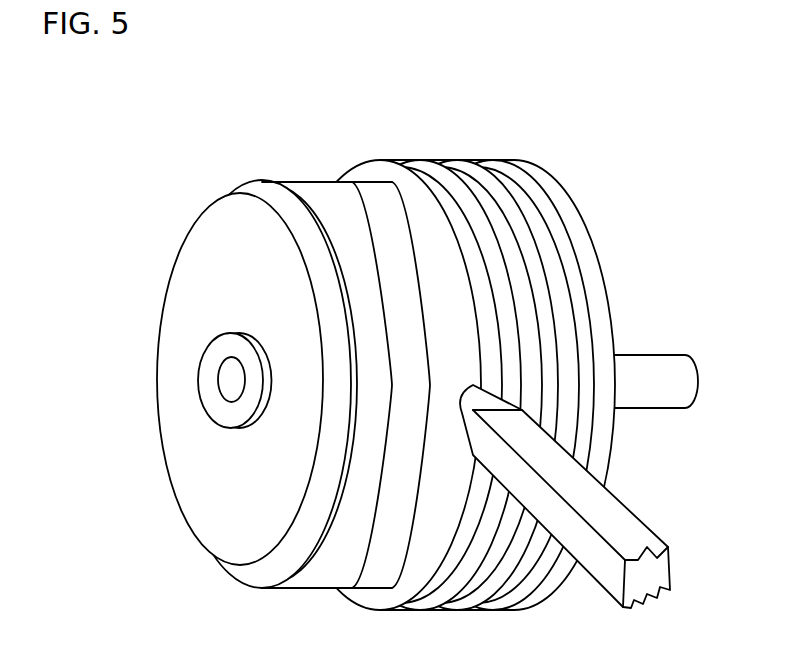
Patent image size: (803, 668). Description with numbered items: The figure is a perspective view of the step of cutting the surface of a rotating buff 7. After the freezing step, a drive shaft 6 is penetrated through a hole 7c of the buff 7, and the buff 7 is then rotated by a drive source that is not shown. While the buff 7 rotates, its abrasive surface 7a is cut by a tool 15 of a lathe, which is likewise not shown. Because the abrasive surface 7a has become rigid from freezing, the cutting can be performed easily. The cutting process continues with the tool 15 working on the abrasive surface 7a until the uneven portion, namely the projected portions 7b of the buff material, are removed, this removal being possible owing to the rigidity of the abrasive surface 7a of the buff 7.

The drive shaft 6 is at (648, 352).
The buff 7 is at (298, 173).
The abrasive surface 7a is at (325, 181).
The projected portions 7b is at (498, 159).
The hole 7c is at (245, 382).
The tool 15 is at (648, 513).